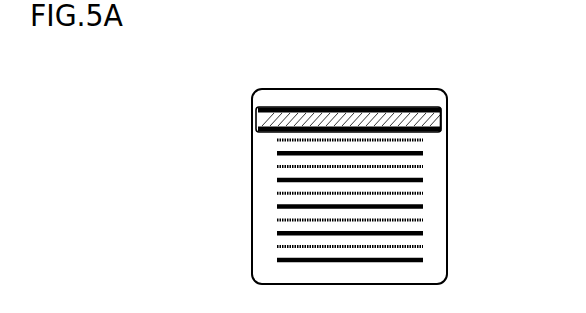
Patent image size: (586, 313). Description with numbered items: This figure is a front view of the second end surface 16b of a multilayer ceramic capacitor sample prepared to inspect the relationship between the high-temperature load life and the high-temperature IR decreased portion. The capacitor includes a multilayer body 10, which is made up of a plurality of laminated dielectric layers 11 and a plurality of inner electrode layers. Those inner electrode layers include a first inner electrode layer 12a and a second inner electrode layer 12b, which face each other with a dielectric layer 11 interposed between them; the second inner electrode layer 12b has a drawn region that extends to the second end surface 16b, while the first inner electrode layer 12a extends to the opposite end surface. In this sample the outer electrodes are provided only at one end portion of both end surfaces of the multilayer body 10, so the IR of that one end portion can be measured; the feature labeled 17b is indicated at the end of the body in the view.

The multilayer body 10 is at (376, 90).
The dielectric layer 11 is at (335, 118).
The first inner electrode layer 12a is at (390, 121).
The second inner electrode layer 12b is at (414, 125).
The second end surface 16b is at (283, 102).
The end portion of header 17b is at (432, 119).